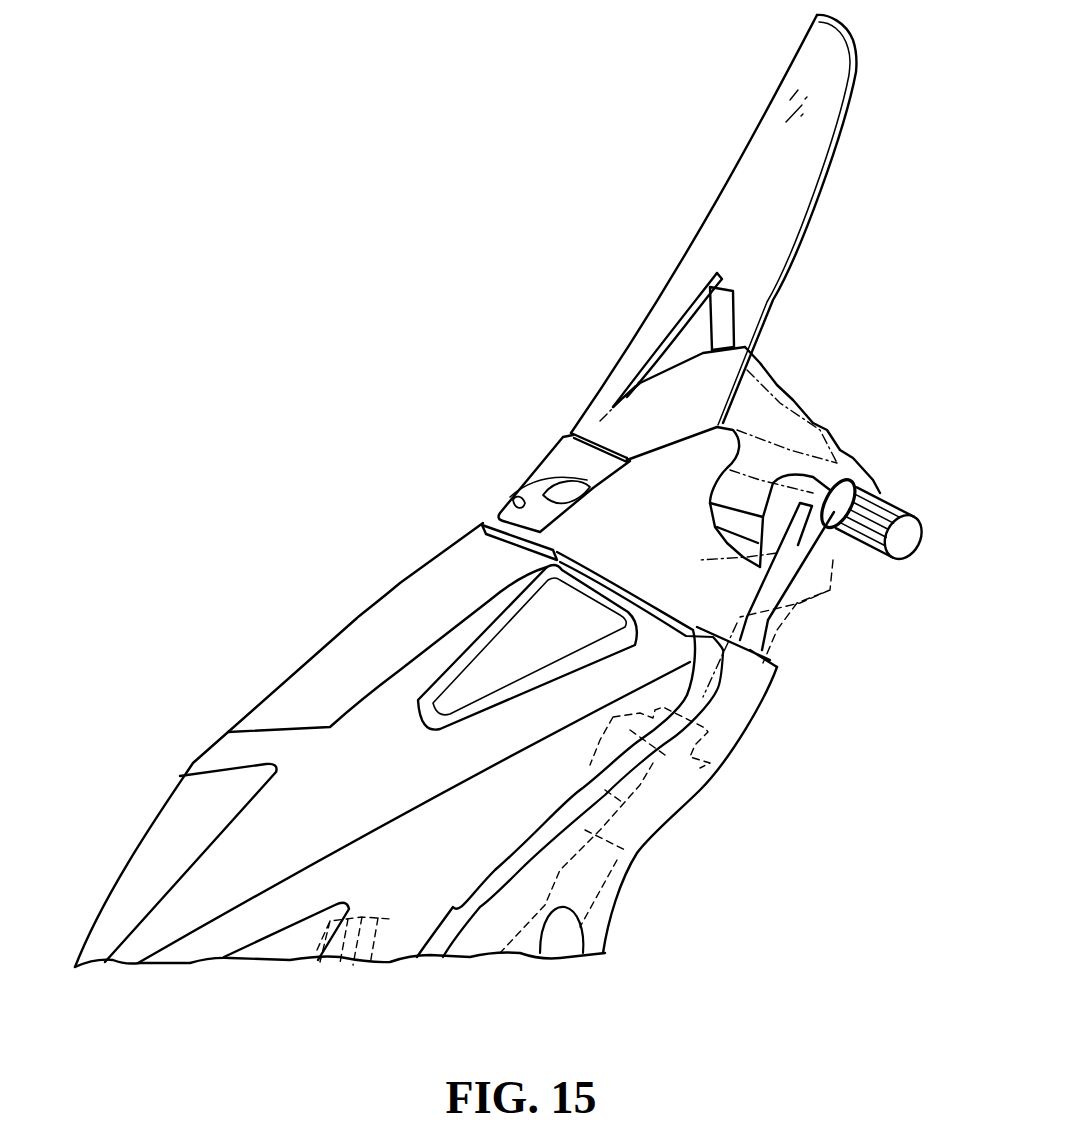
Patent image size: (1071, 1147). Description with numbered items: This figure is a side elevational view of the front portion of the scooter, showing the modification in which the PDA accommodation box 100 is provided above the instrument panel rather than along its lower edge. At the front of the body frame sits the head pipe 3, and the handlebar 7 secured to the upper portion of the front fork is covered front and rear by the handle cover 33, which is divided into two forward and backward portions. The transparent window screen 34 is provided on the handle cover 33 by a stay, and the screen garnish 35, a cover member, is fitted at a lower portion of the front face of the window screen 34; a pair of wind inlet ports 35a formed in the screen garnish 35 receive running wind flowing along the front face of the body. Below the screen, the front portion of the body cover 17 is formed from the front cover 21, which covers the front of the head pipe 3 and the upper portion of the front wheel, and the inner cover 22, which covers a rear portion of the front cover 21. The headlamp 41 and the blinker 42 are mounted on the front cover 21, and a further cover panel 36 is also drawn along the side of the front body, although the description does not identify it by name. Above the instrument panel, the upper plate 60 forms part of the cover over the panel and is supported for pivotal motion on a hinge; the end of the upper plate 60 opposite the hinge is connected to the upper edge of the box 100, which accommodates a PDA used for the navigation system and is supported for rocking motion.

The head pipe 3 is at (618, 872).
The handlebar 7 is at (828, 550).
The body cover 17 is at (193, 757).
The front cover 21 is at (325, 778).
The inner cover 22 is at (710, 783).
The handle cover 33 is at (828, 600).
The window screen 34 is at (726, 186).
The screen garnish 35 is at (548, 445).
The wind inlet port 35a is at (510, 498).
The side cowl panel 36 is at (365, 628).
The headlamp 41 is at (140, 850).
The blinker 42 is at (520, 627).
The upper plate 60 is at (670, 313).
The PDA accommodation box 100 is at (727, 303).